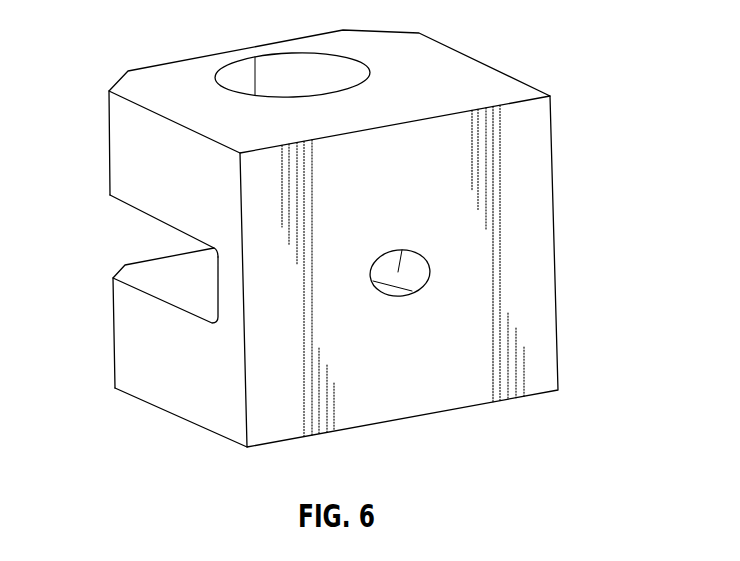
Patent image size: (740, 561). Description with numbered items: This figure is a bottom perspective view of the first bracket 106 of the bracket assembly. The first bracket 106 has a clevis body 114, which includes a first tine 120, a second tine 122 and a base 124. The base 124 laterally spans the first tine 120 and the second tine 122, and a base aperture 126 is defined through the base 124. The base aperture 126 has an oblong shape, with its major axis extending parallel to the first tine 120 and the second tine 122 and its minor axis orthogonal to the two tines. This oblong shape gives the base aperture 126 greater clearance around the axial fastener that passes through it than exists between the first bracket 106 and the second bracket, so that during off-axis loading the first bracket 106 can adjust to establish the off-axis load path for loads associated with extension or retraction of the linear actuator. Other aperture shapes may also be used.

The first bracket 106 is at (331, 240).
The clevis body 114 is at (481, 45).
The first tine 120 is at (125, 359).
The second tine 122 is at (125, 152).
The base 124 is at (512, 190).
The base aperture 126 is at (397, 270).